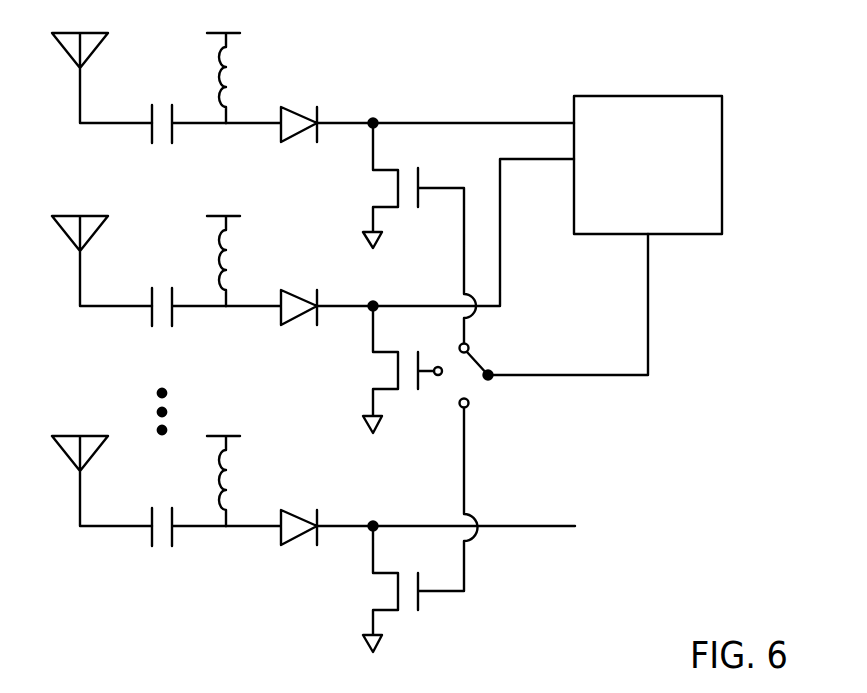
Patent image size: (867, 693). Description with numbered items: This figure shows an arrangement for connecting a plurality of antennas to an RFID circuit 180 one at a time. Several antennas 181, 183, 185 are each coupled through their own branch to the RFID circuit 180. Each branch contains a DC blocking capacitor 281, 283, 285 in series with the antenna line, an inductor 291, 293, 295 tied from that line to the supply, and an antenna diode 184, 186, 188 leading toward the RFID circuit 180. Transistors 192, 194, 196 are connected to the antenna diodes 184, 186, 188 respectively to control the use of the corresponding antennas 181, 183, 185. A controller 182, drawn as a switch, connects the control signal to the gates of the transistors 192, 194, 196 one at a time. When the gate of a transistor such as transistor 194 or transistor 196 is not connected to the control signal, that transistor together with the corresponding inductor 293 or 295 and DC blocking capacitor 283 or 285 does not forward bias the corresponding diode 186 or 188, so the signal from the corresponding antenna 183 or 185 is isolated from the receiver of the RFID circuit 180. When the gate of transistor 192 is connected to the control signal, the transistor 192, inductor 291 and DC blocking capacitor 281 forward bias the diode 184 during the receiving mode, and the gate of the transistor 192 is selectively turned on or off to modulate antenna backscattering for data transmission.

The RFID circuit 180 is at (634, 189).
The antenna 181 is at (62, 55).
The controller 182 is at (490, 380).
The antenna 183 is at (62, 238).
The antenna diode 184 is at (297, 107).
The antenna 185 is at (62, 458).
The antenna diode 186 is at (296, 290).
The antenna diode 188 is at (296, 510).
The transistor 192 is at (390, 208).
The transistor 194 is at (395, 390).
The transistor 196 is at (392, 611).
The DC blocking capacitor 281 is at (150, 115).
The DC blocking capacitor 283 is at (150, 298).
The DC blocking capacitor 285 is at (150, 518).
The inductor 291 is at (218, 81).
The inductor 293 is at (218, 264).
The inductor 295 is at (218, 484).